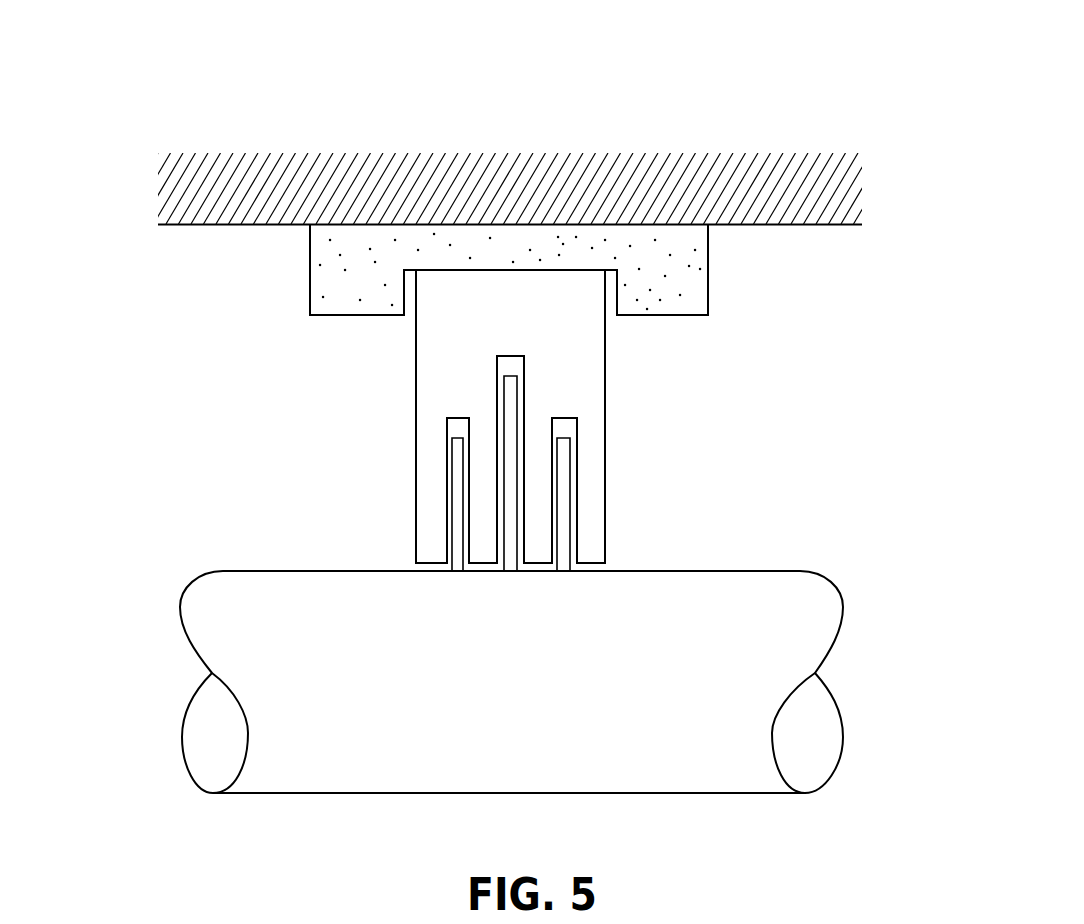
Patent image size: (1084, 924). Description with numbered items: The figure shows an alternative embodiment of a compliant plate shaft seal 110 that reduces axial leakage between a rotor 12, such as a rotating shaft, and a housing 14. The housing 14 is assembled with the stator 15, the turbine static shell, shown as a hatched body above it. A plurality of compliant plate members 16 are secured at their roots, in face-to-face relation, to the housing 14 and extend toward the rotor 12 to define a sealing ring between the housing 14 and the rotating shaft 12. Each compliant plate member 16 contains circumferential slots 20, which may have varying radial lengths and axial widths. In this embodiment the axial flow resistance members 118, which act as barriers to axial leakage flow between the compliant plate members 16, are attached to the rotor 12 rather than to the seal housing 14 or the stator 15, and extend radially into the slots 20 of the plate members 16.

The seal 110 is at (395, 103).
The stator 15 is at (257, 163).
The housing 14 is at (655, 253).
The compliant plate members 16 is at (562, 312).
The circumferential slots 20 is at (503, 353).
The axial flow resistance member 118 is at (510, 470).
The rotor 12 is at (757, 640).